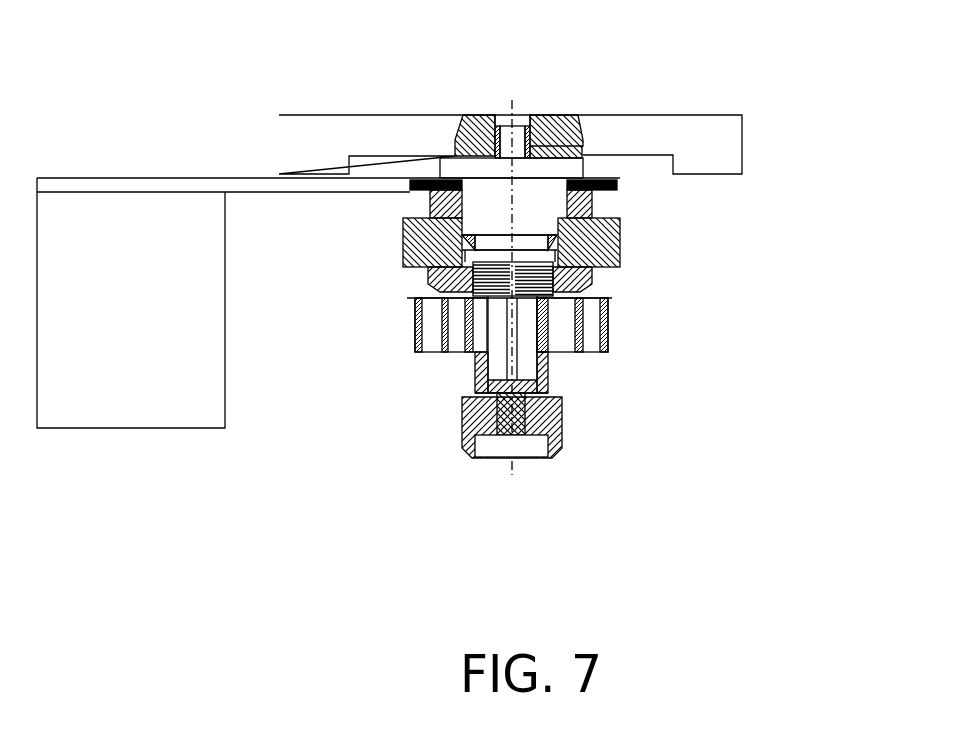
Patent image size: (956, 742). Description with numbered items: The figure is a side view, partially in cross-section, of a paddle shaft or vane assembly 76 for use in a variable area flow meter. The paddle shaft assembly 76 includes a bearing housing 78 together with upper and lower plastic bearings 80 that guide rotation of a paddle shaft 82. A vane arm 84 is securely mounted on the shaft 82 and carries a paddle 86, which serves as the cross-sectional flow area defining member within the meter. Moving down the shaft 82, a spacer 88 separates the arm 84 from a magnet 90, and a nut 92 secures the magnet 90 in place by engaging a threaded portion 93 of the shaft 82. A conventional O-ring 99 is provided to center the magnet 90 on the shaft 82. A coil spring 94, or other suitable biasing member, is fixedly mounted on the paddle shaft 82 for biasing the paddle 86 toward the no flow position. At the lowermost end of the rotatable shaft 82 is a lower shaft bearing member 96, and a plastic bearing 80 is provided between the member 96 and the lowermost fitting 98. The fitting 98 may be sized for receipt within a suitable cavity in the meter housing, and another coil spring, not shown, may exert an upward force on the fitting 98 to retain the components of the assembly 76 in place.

The paddle shaft assembly 76 is at (315, 417).
The bearing housing 78 is at (585, 115).
The plastic bearing 80 is at (583, 144).
The paddle shaft 82 is at (580, 167).
The vane arm 84 is at (410, 192).
The paddle 86 is at (173, 338).
The spacer 88 is at (592, 203).
The magnet 90 is at (617, 248).
The nut 92 is at (592, 278).
The threaded portion 93 is at (478, 295).
The coil spring 94 is at (567, 335).
The lower shaft bearing member 96 is at (475, 385).
The fitting 98 is at (463, 443).
The O-ring 99 is at (608, 266).